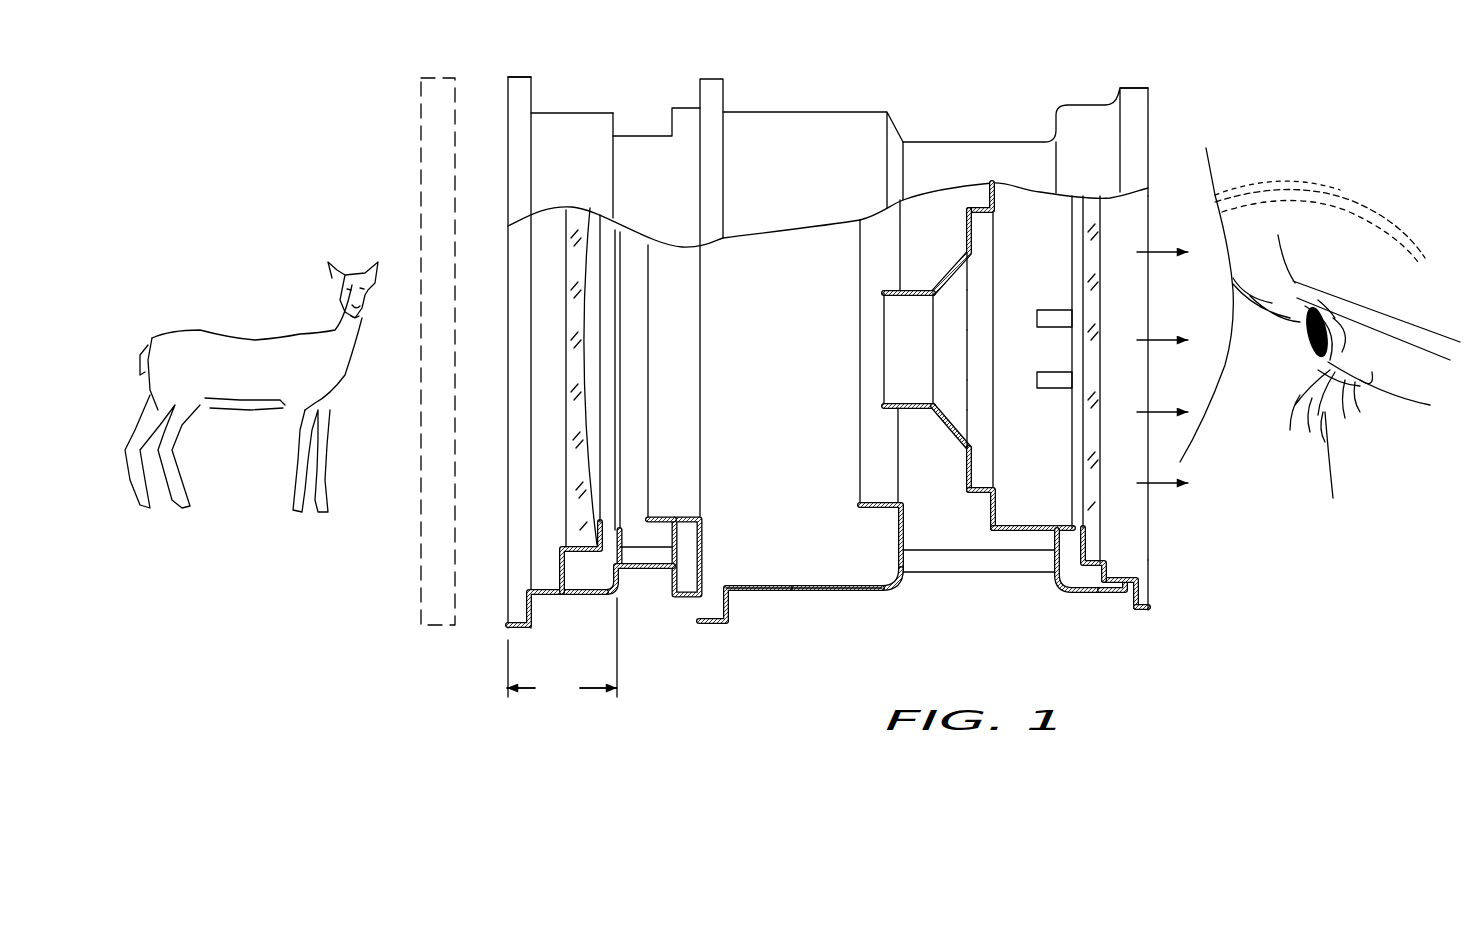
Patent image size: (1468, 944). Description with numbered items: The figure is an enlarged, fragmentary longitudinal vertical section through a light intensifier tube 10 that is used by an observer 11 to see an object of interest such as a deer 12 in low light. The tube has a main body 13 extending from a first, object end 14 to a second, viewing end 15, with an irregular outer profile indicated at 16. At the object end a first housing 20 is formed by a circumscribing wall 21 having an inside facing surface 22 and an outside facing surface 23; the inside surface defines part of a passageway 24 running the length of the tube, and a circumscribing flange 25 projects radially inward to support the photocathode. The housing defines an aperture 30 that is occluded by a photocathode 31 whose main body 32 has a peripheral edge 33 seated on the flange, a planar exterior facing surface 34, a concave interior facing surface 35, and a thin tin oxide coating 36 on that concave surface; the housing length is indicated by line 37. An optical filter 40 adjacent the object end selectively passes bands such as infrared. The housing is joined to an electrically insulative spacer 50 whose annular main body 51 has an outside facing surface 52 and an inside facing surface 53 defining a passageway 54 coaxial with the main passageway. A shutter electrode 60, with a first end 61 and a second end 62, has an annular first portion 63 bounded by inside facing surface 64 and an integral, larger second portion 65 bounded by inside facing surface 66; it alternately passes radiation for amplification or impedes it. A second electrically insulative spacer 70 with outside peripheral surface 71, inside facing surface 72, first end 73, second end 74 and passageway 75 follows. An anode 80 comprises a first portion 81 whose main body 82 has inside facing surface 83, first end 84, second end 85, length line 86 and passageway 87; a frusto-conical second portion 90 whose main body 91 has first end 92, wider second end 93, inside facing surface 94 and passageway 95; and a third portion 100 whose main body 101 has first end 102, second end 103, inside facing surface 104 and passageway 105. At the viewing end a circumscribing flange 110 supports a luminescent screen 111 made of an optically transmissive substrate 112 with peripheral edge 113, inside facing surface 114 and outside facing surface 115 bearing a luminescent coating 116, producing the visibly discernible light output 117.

The light intensifier tube 10 is at (1030, 70).
The observer 11 is at (1418, 405).
The deer 12 is at (237, 382).
The main body 13 is at (743, 650).
The first end 14 is at (508, 136).
The second end 15 is at (1140, 612).
The image intensifier housing 16 is at (784, 200).
The first housing 20 is at (576, 110).
The circumscribing wall 21 is at (559, 183).
The inside facing surface 22 is at (596, 573).
The outside facing surface 23 is at (567, 597).
The passageway 24 is at (737, 341).
The circumscribing flange 25 is at (587, 543).
The aperture 30 is at (520, 238).
The photocathode 31 is at (560, 381).
The main body 32 is at (577, 325).
The peripheral edge 33 is at (572, 545).
The exterior facing surface 34 is at (566, 302).
The interior facing surface 35 is at (583, 267).
The thin coating 36 is at (585, 418).
The line indicating length of first housing 37 is at (562, 651).
The optical filter 40 is at (420, 575).
The electrically insulative spacer 50 is at (633, 600).
The main body 51 is at (635, 201).
The outside facing surface 52 is at (630, 585).
The inside facing surface 53 is at (637, 548).
The passageway 54 is at (636, 410).
The shutter electrode 60 is at (845, 103).
The first end 61 is at (664, 384).
The second end 62 is at (880, 505).
The first portion 63 is at (686, 524).
The inside facing surface 64 is at (688, 517).
The second portion 65 is at (803, 592).
The inside facing surface 66 is at (780, 588).
The second electrically insulative spacer 70 is at (1005, 577).
The outside peripheral surface 71 is at (999, 170).
The inside facing surface 72 is at (928, 550).
The first end 73 is at (903, 575).
The second end 74 is at (1053, 575).
The passageway 75 is at (917, 250).
The anode 80 is at (986, 195).
The first portion 81 is at (862, 328).
The main body 82 is at (907, 292).
The inside facing surface 83 is at (895, 398).
The first end 84 is at (882, 402).
The second end 85 is at (910, 349).
The line indicating length of main body 86 is at (932, 410).
The passageway 87 is at (892, 337).
The second portion 90 is at (966, 320).
The main body 91 is at (968, 420).
The first end 92 is at (962, 307).
The second end 93 is at (968, 268).
The inside facing surface 94 is at (963, 395).
The passageway 95 is at (937, 370).
The third portion 100 is at (975, 502).
The main body 101 is at (992, 488).
The first end 102 is at (978, 488).
The second end 103 is at (988, 215).
The inside facing surface 104 is at (978, 207).
The passageway 105 is at (963, 438).
The circumscribing flange 110 is at (1105, 580).
The luminescent screen 111 is at (1105, 363).
The optically transmissive substrate 112 is at (1097, 290).
The peripheral edge 113 is at (1072, 428).
The first inside facing surface 114 is at (1082, 358).
The second outside facing surface 115 is at (1087, 330).
The luminescent coating 116 is at (1103, 366).
The visibly discernable light output 117 is at (1158, 252).